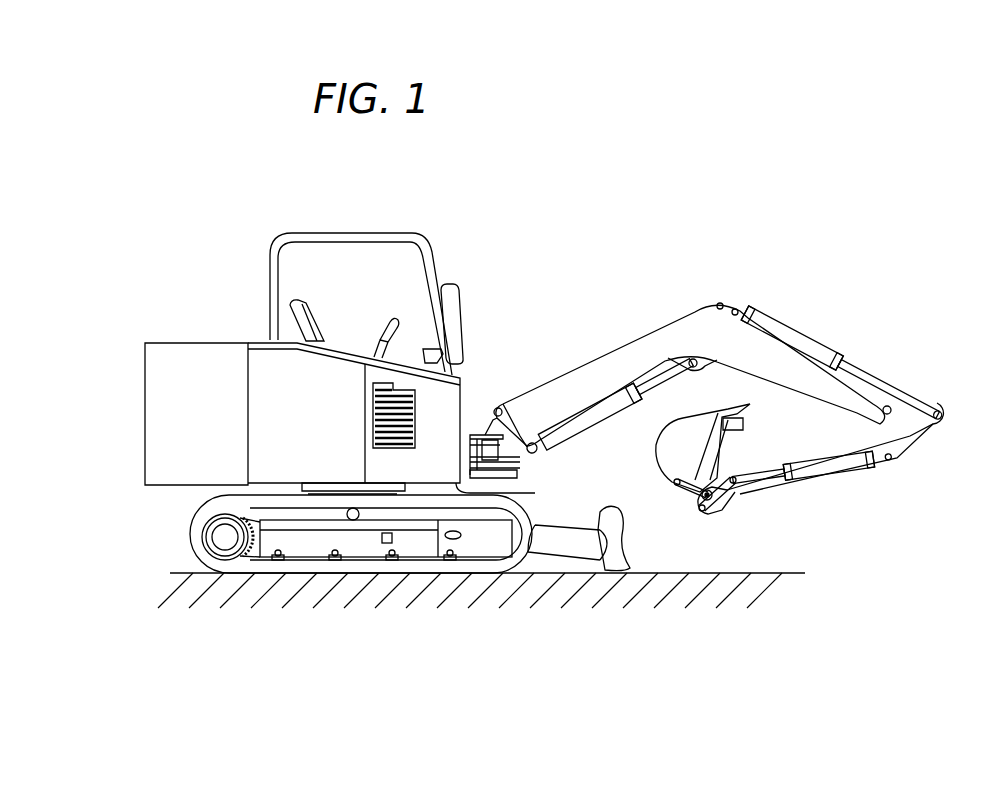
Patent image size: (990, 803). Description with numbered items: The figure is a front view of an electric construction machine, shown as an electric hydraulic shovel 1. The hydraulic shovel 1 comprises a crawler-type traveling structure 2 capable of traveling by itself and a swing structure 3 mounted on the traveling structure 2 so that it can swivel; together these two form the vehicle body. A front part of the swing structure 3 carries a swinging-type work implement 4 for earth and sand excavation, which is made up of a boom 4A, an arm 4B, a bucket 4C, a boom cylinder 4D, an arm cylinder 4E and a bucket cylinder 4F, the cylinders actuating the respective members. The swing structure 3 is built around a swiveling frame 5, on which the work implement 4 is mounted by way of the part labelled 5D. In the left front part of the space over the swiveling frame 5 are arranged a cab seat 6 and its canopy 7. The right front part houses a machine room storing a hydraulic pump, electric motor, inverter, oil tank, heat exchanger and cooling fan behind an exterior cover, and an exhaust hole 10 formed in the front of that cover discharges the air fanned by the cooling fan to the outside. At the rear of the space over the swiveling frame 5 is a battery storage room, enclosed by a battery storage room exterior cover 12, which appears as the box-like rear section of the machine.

The hydraulic shovel 1 is at (568, 238).
The traveling structure 2 is at (195, 538).
The swing structure 3 is at (215, 319).
The work implement 4 is at (680, 313).
The boom 4A is at (603, 358).
The arm 4B is at (810, 448).
The bucket 4C is at (683, 430).
The boom cylinder 4D is at (593, 418).
The arm cylinder 4E is at (793, 340).
The bucket cylinder 4F is at (828, 475).
The swiveling frame 5 is at (450, 477).
The swing post bracket 5D is at (520, 443).
The cab seat 6 is at (293, 300).
The canopy 7 is at (415, 237).
The exhaust hole 10 is at (420, 418).
The battery storage room exterior cover 12 is at (183, 340).